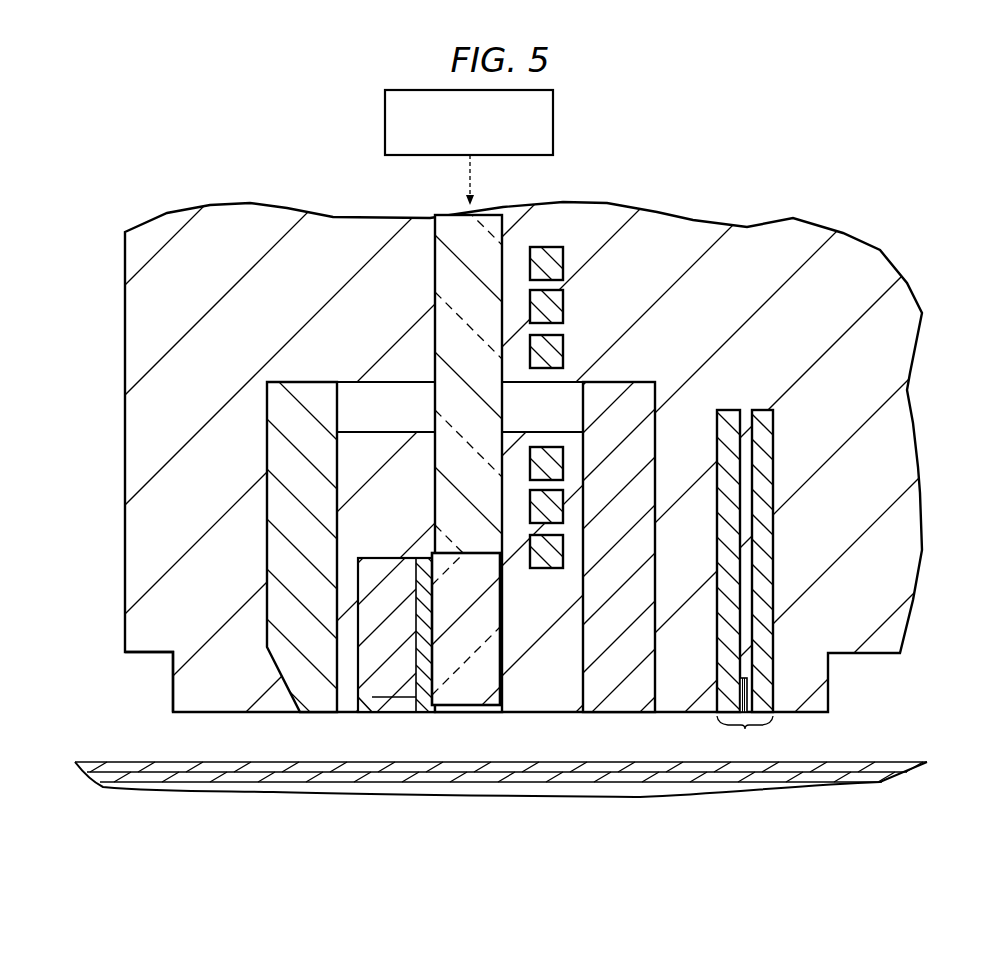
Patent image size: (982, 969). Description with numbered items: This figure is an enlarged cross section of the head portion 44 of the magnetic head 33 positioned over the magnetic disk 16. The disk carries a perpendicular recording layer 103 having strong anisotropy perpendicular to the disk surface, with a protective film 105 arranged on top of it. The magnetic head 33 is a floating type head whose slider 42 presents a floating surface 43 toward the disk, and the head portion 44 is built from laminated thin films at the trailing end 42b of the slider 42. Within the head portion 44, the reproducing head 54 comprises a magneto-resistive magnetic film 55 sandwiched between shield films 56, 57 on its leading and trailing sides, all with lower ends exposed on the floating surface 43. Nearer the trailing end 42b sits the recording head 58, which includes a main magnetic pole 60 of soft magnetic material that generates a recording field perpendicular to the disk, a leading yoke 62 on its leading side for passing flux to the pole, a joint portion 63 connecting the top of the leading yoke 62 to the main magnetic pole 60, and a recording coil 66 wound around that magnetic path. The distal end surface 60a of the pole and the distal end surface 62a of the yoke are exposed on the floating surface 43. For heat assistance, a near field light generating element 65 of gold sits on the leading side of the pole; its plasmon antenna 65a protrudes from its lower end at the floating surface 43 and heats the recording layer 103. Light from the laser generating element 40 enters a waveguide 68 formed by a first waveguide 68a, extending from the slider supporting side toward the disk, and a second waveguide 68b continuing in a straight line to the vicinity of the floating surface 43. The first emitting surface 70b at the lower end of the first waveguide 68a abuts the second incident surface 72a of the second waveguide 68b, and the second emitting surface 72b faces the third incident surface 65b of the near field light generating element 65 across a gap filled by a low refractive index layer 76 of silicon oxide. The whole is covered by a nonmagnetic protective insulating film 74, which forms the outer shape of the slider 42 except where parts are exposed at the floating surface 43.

The magnetic disk 16 is at (900, 752).
The magnetic head 33 is at (789, 210).
The laser generating element 40 is at (553, 122).
The slider 42 is at (904, 566).
The trailing end 42b is at (125, 455).
The floating surface 43 is at (553, 713).
The head portion 44 is at (188, 701).
The reproducing head 54 is at (745, 736).
The magnetic film 55 is at (750, 692).
The shield film 56 is at (764, 520).
The shield film 57 is at (729, 481).
The recording head 58 is at (370, 392).
The main magnetic pole 60 is at (280, 553).
The distal end surface of main magnetic pole 60a is at (311, 713).
The leading yoke 62 is at (600, 713).
The distal end surface of leading yoke 62a is at (620, 713).
The joint portion 63 is at (343, 368).
The near field light generating element 65 is at (392, 666).
The plasmon antenna 65a is at (355, 706).
The third incident surface 65b is at (422, 678).
The recording coil 66 is at (565, 350).
The waveguide 68 is at (430, 266).
The first waveguide 68a is at (498, 256).
The second waveguide 68b is at (478, 688).
The first emitting surface 70b is at (480, 668).
The second incident surface 72a is at (440, 535).
The second emitting surface 72b is at (410, 627).
The protective insulating film 74 is at (168, 226).
The low refractive index layer 76 is at (418, 700).
The perpendicular recording layer 103 is at (780, 776).
The protective film 105 is at (856, 773).